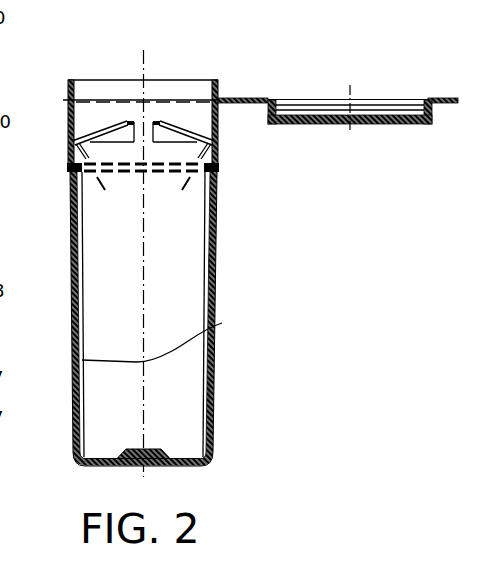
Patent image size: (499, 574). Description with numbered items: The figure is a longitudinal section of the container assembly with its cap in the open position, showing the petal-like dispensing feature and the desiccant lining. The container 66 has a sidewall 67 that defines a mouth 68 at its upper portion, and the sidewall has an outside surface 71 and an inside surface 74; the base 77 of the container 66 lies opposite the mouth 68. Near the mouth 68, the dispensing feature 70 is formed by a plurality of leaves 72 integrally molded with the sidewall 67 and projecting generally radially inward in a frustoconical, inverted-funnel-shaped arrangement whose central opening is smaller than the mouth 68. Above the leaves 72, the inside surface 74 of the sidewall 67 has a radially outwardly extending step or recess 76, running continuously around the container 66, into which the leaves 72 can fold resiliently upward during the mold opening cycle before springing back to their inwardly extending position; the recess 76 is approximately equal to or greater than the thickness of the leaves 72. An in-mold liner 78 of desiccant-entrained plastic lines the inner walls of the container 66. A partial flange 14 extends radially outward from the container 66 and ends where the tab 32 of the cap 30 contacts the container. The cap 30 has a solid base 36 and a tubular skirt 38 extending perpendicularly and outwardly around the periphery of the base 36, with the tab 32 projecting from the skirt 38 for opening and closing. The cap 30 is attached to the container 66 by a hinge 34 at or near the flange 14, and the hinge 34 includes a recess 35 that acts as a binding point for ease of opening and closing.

The partial flange 14 is at (68, 96).
The cap 30 is at (343, 110).
The tab 32 is at (443, 100).
The hinge 34 is at (258, 103).
The recess 35 is at (243, 100).
The solid base 36 is at (307, 117).
The tubular skirt 38 is at (432, 117).
The container 66 is at (272, 224).
The sidewall 67 is at (215, 392).
The mouth 68 is at (68, 82).
The dispensing feature 70 is at (122, 109).
The outside surface 71 is at (70, 335).
The leaves 72 is at (122, 137).
The inside surface 74 is at (211, 266).
The recess 76 is at (216, 120).
The base 77 is at (190, 460).
The in-mold liner 78 is at (202, 352).